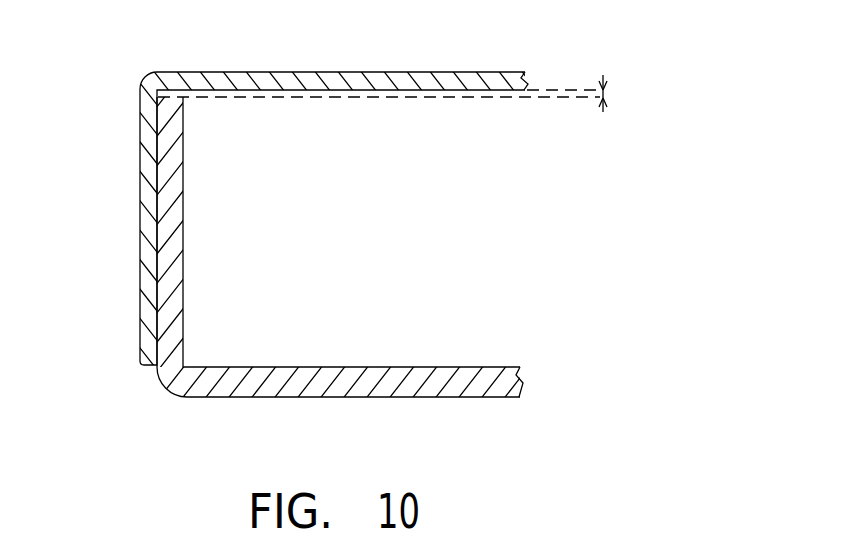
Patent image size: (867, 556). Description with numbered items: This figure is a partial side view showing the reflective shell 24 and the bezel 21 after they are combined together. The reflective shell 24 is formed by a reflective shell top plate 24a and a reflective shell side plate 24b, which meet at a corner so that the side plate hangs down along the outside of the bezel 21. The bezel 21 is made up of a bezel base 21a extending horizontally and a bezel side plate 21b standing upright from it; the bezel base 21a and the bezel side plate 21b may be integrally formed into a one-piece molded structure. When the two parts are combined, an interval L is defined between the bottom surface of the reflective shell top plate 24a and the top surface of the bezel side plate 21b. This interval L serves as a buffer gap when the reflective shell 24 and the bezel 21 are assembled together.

The bezel 21 is at (503, 397).
The bezel base 21a is at (409, 388).
The bezel side plate 21b is at (178, 250).
The reflective shell 24 is at (525, 72).
The reflective shell top plate 24a is at (415, 79).
The reflective shell side plate 24b is at (143, 110).
The interval L is at (615, 94).